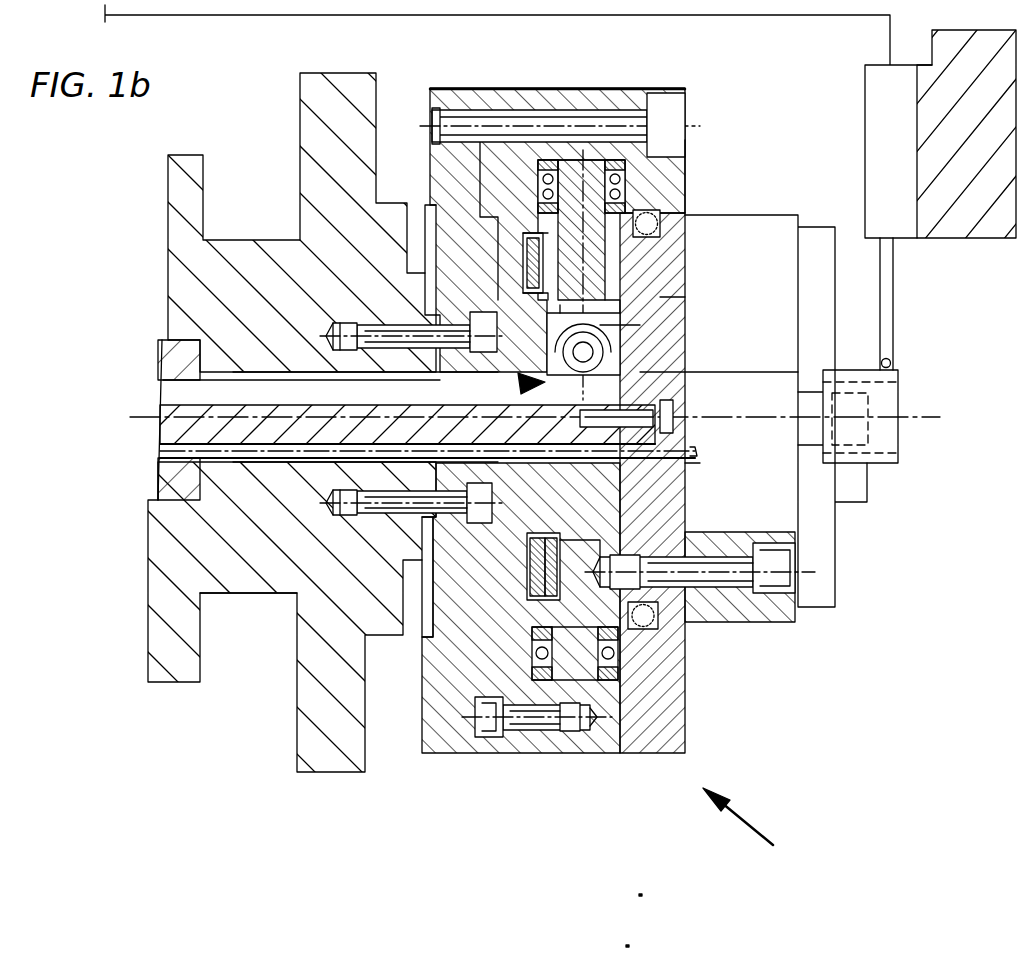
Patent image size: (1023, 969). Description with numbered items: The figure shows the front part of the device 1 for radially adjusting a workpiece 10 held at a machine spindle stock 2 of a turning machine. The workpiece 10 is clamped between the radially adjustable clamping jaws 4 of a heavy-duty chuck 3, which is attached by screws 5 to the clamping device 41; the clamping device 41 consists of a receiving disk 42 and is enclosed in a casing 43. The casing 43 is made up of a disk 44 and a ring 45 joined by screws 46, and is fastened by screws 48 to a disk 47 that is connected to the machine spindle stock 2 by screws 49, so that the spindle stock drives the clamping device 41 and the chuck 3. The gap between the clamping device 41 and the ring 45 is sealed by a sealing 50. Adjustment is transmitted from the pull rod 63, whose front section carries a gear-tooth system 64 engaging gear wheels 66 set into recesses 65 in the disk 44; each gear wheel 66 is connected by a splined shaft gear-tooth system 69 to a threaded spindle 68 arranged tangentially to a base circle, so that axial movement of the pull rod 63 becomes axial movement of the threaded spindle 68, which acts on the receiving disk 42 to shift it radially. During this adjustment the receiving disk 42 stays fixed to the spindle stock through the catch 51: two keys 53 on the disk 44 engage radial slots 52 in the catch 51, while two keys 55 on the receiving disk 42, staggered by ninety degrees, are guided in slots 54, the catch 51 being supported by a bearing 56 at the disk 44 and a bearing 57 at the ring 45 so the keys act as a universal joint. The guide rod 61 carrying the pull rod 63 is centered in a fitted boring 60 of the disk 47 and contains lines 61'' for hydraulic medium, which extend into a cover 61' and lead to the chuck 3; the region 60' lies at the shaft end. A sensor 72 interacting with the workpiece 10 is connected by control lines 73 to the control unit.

The device 1 is at (747, 828).
The machine spindle stock 2 is at (312, 134).
The heavy-duty chuck 3 is at (746, 600).
The clamping jaws 4 is at (836, 607).
The screws 5 is at (771, 580).
The workpiece 10 is at (900, 440).
The clamping device 41 is at (697, 244).
The receiving disk 42 is at (662, 297).
The casing 43 is at (658, 84).
The disk 44 is at (500, 737).
The ring 45 is at (596, 737).
The screws 46 is at (472, 738).
The disk 47 is at (445, 110).
The screws 48 is at (666, 114).
The screws 49 is at (478, 535).
The sealing 50 is at (686, 165).
The catch 51 is at (549, 235).
The slots 52 is at (540, 255).
The keys 53 is at (545, 300).
The slots 54 is at (536, 600).
The keys 55 is at (530, 640).
The bearing 56 is at (541, 682).
The bearing 57 is at (610, 682).
The fitted boring 60 is at (312, 547).
The recess 60' is at (762, 452).
The guide rod 61 is at (511, 484).
The cover 61' is at (792, 506).
The lines 61'' is at (386, 473).
The pull rod 63 is at (186, 400).
The gear-tooth system 64 is at (540, 381).
The recesses 65 is at (588, 330).
The gear wheels 66 is at (896, 320).
The threaded spindle 68 is at (798, 372).
The splined shaft gear-tooth system 69 is at (625, 345).
The sensor 72 is at (903, 289).
The control lines 73 is at (778, 20).